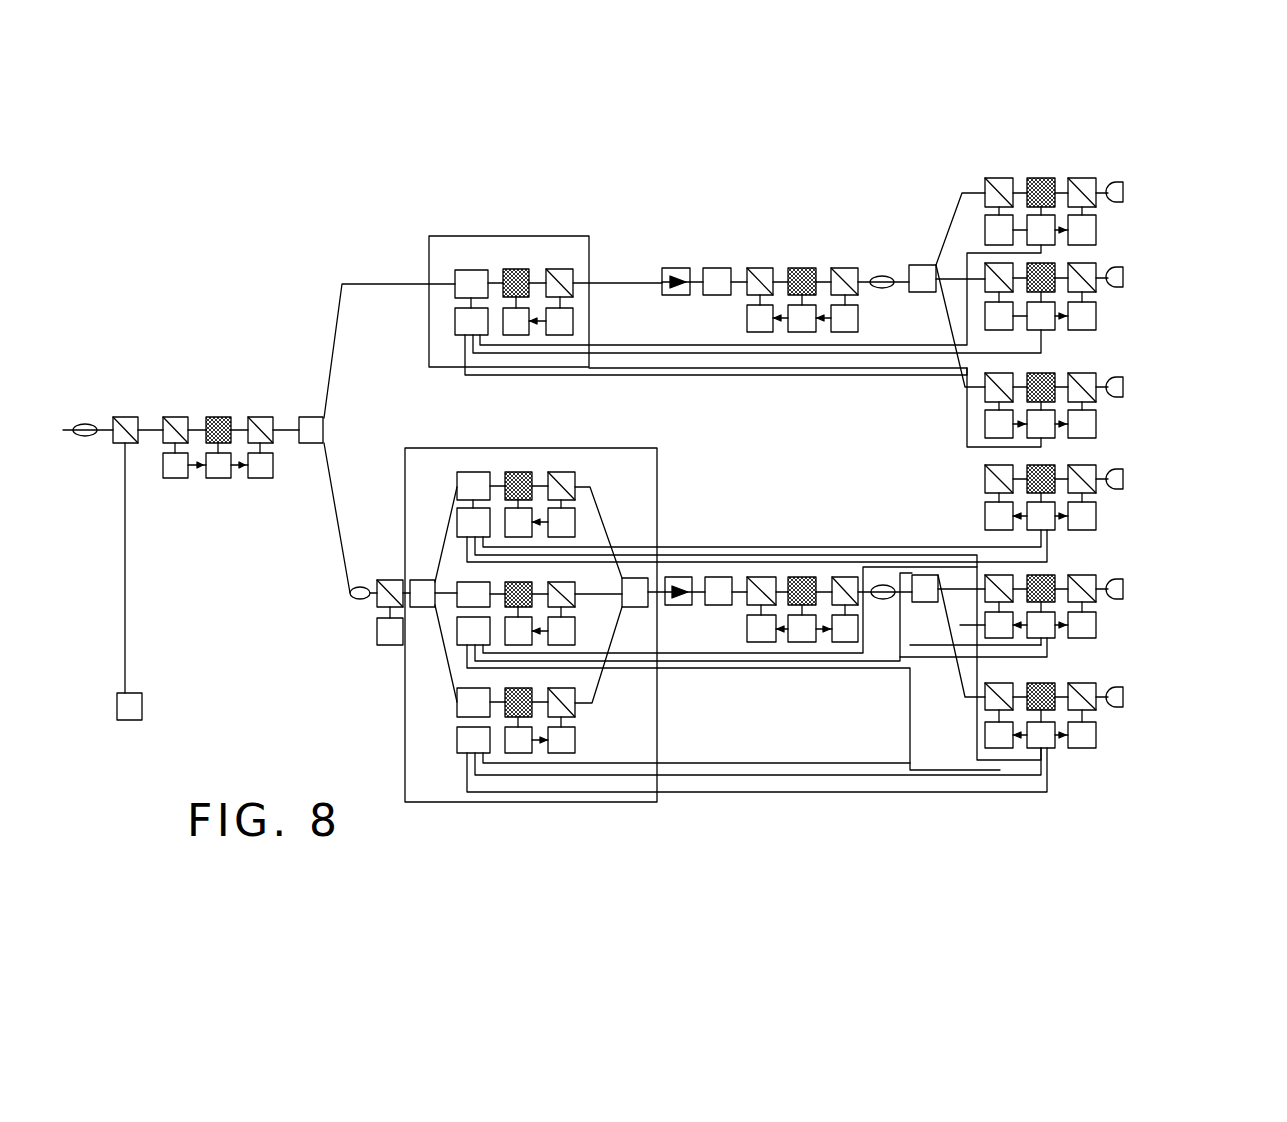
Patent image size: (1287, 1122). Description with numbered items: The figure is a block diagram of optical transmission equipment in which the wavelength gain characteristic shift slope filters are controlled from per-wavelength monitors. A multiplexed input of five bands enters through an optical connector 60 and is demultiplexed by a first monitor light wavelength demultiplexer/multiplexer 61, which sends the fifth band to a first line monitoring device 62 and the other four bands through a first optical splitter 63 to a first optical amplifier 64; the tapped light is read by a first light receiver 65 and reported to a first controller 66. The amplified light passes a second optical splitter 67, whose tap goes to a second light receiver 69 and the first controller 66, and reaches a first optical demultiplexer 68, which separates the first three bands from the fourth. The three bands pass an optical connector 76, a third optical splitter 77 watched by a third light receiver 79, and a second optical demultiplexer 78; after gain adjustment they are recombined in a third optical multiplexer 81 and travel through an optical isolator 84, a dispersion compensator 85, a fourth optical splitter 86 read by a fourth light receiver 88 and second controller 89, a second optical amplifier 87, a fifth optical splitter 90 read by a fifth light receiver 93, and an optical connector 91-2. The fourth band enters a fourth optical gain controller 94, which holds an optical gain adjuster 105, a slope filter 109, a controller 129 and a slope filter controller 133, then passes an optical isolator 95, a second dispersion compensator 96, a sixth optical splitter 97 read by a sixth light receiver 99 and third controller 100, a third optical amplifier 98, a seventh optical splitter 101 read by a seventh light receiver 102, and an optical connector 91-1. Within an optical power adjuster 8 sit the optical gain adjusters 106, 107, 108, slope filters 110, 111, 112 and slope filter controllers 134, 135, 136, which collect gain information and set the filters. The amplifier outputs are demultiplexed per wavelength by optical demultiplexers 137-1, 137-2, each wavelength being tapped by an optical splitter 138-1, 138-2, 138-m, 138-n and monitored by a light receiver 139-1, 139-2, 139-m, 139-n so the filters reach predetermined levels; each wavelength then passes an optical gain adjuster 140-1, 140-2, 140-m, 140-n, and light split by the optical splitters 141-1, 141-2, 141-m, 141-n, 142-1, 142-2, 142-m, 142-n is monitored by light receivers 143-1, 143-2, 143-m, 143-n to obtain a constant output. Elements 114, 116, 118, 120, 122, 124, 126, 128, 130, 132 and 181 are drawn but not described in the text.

The optical power adjuster 8 is at (531, 625).
The optical connector 60 is at (74, 428).
The first monitor light wavelength demultiplexer/multiplexer 61 is at (125, 414).
The first line monitoring device 62 is at (130, 720).
The first optical splitter 63 is at (163, 414).
The first optical amplifier 64 is at (210, 414).
The first light receiver 65 is at (175, 477).
The first controller 66 is at (210, 477).
The second optical splitter 67 is at (252, 414).
The first optical demultiplexer 68 is at (364, 438).
The second light receiver 69 is at (252, 477).
The optical connector 76 is at (360, 600).
The third optical splitter 77 is at (393, 582).
The second optical demultiplexer 78 is at (432, 594).
The third light receiver 79 is at (390, 641).
The third optical multiplexer 81 is at (643, 603).
The optical isolator 84 is at (678, 604).
The dispersion compensator 85 is at (719, 604).
The fourth optical splitter 86 is at (760, 577).
The second optical amplifier 87 is at (802, 577).
The fourth light receiver 88 is at (762, 642).
The second controller 89 is at (802, 642).
The fifth optical splitter 90 is at (845, 577).
The fifth light receiver 93 is at (845, 642).
The fourth optical gain controller 94 is at (509, 301).
The optical isolator 95 is at (676, 265).
The second dispersion compensator 96 is at (710, 265).
The sixth optical splitter 97 is at (752, 270).
The third optical amplifier 98 is at (794, 270).
The sixth light receiver 99 is at (767, 318).
The third controller 100 is at (800, 332).
The seventh optical splitter 101 is at (862, 270).
The seventh light receiver 102 is at (843, 332).
The optical gain adjuster 105 is at (520, 275).
The optical gain adjuster 106 is at (522, 477).
The optical gain adjuster 107 is at (518, 582).
The optical gain adjuster 108 is at (575, 695).
The wavelength gain characteristic shift slope filter 109 is at (479, 284).
The wavelength gain characteristic shift slope filter 110 is at (481, 486).
The wavelength gain characteristic shift slope filter 111 is at (481, 594).
The wavelength gain characteristic shift slope filter 112 is at (481, 702).
The beam splitter 114 is at (601, 275).
The beam splitter 116 is at (581, 512).
The beam splitter 118 is at (575, 628).
The beam splitter 120 is at (575, 712).
The photodetector 122 is at (573, 325).
The photodetector 124 is at (575, 520).
The photodetector 126 is at (645, 690).
The photodetector 128 is at (562, 753).
The controller 129 is at (516, 335).
The controller 130 is at (527, 537).
The controller 132 is at (520, 753).
The wavelength gain characteristic shift slope filter controller 133 is at (748, 346).
The wavelength gain characteristic shift slope filter controller 134 is at (752, 630).
The wavelength gain characteristic shift slope filter controller 135 is at (752, 668).
The wavelength gain characteristic shift slope filter controller 136 is at (752, 759).
The controller 181 is at (518, 645).
The optical connector 91-1 is at (882, 276).
The optical connector 91-2 is at (883, 585).
The optical demultiplexer 137-1 is at (922, 265).
The optical demultiplexer 137-2 is at (925, 575).
The optical splitter 138-1 is at (999, 178).
The light receiver 139-1 is at (985, 223).
The optical gain adjuster 140-1 is at (1041, 178).
The optical splitter 141-1 is at (1041, 248).
The optical splitter 142-1 is at (1082, 178).
The light receiver 143-1 is at (1096, 222).
The optical splitter 138-2 is at (943, 240).
The light receiver 139-2 is at (985, 313).
The optical gain adjuster 140-2 is at (1041, 263).
The optical splitter 141-2 is at (1041, 331).
The optical splitter 142-2 is at (1096, 292).
The light receiver 143-2 is at (1096, 316).
The optical splitter 138-m is at (965, 387).
The light receiver 139-m is at (985, 424).
The optical gain adjuster 140-m is at (1041, 373).
The optical splitter 141-m is at (1041, 438).
The optical splitter 142-m is at (1096, 402).
The light receiver 143-m is at (1096, 424).
The optical splitter 138-n is at (963, 697).
The light receiver 139-n is at (1000, 750).
The optical gain adjuster 140-n is at (1041, 683).
The optical splitter 141-n is at (1041, 750).
The optical splitter 142-n is at (1096, 710).
The light receiver 143-n is at (1096, 735).